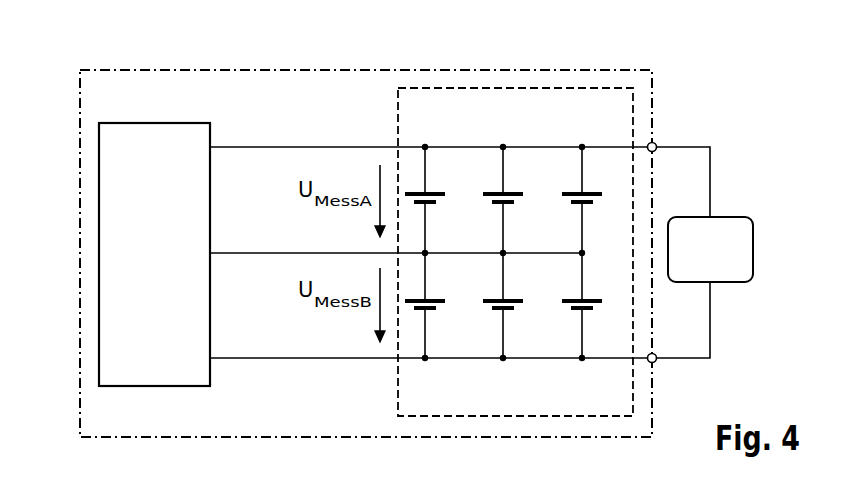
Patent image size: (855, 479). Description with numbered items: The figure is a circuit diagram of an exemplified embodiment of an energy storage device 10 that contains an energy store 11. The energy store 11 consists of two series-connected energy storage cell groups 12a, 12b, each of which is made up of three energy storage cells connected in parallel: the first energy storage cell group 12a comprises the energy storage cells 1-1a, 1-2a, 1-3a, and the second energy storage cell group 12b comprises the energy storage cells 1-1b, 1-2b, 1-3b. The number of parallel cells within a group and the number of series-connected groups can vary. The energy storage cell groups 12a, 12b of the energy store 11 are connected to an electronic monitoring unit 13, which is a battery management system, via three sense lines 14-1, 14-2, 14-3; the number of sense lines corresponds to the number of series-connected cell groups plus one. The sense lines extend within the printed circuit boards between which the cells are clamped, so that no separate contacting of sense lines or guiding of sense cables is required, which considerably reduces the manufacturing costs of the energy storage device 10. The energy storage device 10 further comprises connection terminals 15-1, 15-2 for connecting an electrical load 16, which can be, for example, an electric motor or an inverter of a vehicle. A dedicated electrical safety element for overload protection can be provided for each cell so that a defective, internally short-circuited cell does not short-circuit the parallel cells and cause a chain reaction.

The energy storage device 10 is at (80, 108).
The energy store 11 is at (470, 88).
The electronic monitoring unit 13 is at (99, 243).
The sense line 14-1 is at (250, 147).
The sense line 14-2 is at (250, 253).
The sense line 14-3 is at (250, 358).
The energy storage cell 1-1a is at (437, 191).
The energy storage cell 1-2a is at (513, 191).
The energy storage cell 1-3a is at (591, 191).
The energy storage cell 1-1b is at (433, 311).
The energy storage cell 1-2b is at (509, 311).
The energy storage cell 1-3b is at (588, 311).
The connection terminal 15-1 is at (656, 143).
The connection terminal 15-2 is at (654, 363).
The first energy storage cell group 12a is at (644, 177).
The second energy storage cell group 12b is at (644, 304).
The electrical load 16 is at (753, 248).